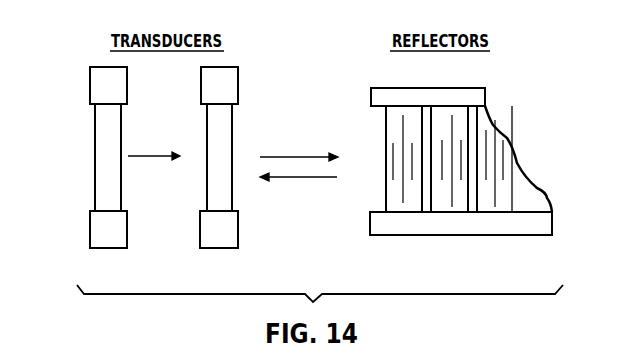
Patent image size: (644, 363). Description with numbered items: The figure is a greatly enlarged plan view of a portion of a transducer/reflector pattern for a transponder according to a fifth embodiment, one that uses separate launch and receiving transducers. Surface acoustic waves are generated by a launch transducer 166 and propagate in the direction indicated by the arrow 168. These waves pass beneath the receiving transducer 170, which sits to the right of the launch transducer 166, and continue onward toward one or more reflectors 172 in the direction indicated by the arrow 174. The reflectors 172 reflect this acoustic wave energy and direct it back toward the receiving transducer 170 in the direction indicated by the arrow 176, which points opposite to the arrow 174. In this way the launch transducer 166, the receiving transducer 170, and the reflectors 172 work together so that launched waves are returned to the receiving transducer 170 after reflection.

The launch transducer 166 is at (100, 118).
The arrow 168 is at (152, 157).
The receiving transducer 170 is at (222, 125).
The reflectors 172 is at (517, 140).
The arrow 174 is at (300, 157).
The arrow 176 is at (300, 177).